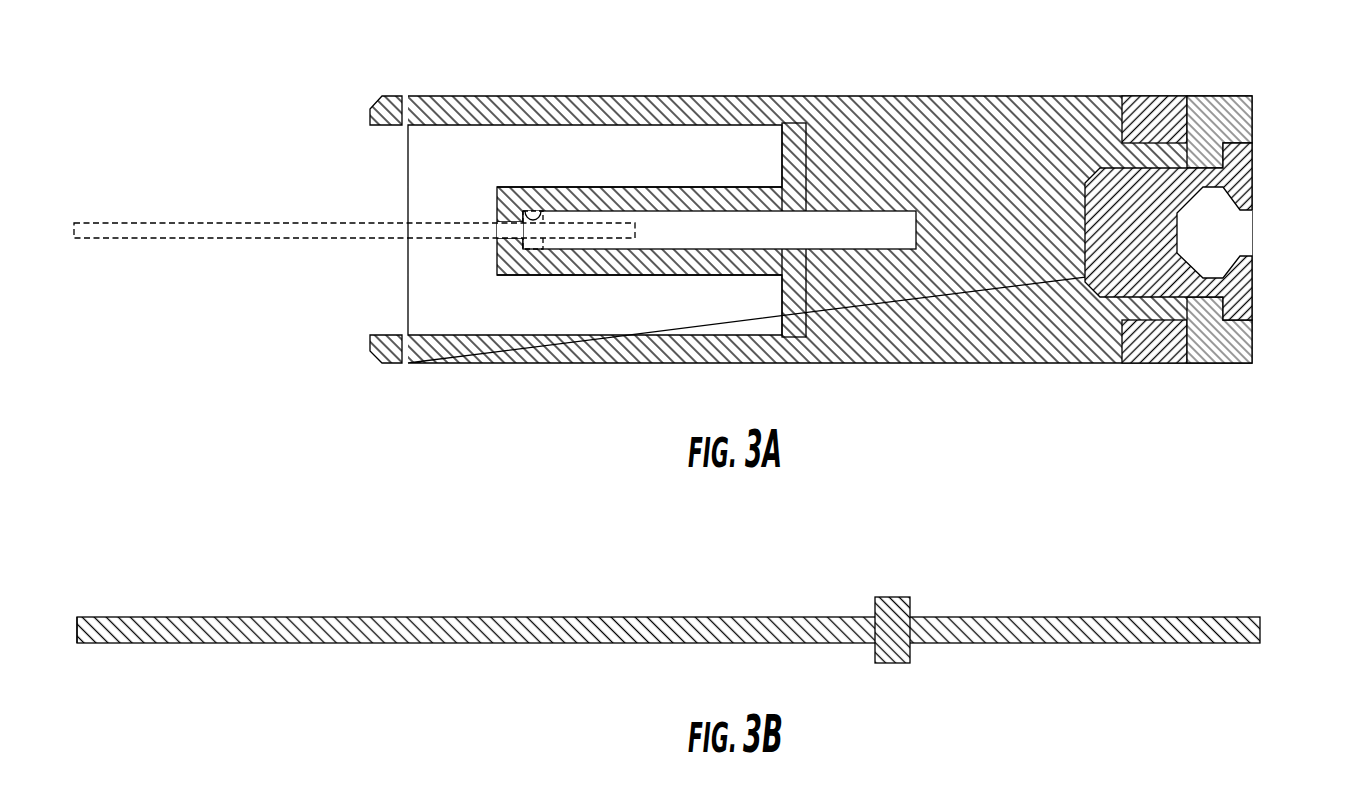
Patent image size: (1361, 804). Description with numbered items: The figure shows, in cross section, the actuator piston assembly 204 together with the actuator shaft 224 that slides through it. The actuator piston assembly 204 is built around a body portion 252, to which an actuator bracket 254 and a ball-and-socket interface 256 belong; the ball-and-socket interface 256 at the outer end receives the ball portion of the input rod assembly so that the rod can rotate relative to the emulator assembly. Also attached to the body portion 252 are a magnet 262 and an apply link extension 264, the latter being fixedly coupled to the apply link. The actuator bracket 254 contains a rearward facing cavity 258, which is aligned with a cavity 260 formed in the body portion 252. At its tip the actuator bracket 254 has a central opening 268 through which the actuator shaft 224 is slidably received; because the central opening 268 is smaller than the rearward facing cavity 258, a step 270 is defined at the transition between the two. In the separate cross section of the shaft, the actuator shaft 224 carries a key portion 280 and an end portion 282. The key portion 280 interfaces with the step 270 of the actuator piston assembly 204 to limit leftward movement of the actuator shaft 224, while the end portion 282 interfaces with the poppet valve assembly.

In FIG. 3A, the actuator piston assembly 204 is at (699, 229).
In FIG. 3A, the actuator shaft 224 is at (211, 214).
In FIG. 3B, the actuator shaft 224 is at (66, 611).
In FIG. 3A, the body portion 252 is at (972, 363).
In FIG. 3A, the actuator bracket 254 is at (635, 276).
In FIG. 3A, the ball-and-socket interface 256 is at (1252, 277).
In FIG. 3A, the rearward facing cavity 258 is at (743, 218).
In FIG. 3A, the cavity 260 is at (864, 241).
In FIG. 3A, the magnet 262 is at (1142, 363).
In FIG. 3A, the apply link extension 264 is at (1217, 96).
In FIG. 3A, the central opening 268 is at (500, 228).
In FIG. 3A, the step 270 is at (537, 217).
In FIG. 3B, the key portion 280 is at (893, 597).
In FIG. 3B, the end portion 282 is at (77, 632).